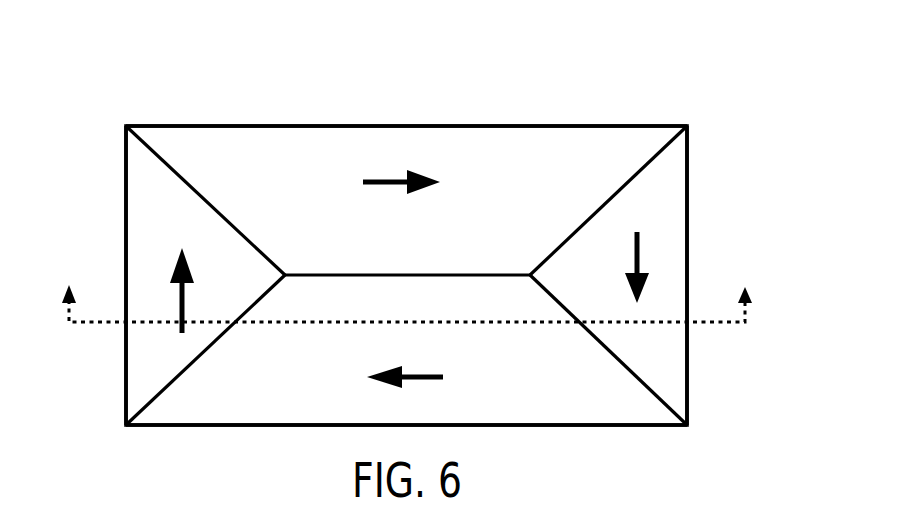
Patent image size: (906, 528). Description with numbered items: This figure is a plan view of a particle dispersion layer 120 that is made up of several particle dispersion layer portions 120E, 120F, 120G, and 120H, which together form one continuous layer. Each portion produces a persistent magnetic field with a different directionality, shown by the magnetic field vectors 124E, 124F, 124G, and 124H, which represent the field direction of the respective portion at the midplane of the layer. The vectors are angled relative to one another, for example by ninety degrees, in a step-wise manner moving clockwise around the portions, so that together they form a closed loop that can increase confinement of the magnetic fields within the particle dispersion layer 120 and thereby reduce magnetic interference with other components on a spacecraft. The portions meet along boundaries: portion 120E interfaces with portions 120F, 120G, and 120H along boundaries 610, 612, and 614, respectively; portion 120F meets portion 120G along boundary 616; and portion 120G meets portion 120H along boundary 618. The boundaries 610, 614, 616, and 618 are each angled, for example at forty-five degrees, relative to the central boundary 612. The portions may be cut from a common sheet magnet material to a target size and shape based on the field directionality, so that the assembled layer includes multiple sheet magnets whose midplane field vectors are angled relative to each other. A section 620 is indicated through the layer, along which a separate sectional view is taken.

The particle dispersion layer 120 is at (701, 87).
The particle dispersion layer portion 120E is at (465, 135).
The particle dispersion layer portion 120F is at (678, 218).
The particle dispersion layer portion 120G is at (307, 417).
The particle dispersion layer portion 120H is at (137, 215).
The boundary 610 is at (638, 173).
The boundary 612 is at (485, 275).
The boundary 614 is at (180, 173).
The boundary 616 is at (638, 377).
The boundary 618 is at (177, 378).
The magnetic field vector 124E is at (375, 182).
The magnetic field vector 124F is at (635, 254).
The magnetic field vector 124G is at (432, 378).
The magnetic field vector 124H is at (175, 303).
The section 620 is at (410, 291).